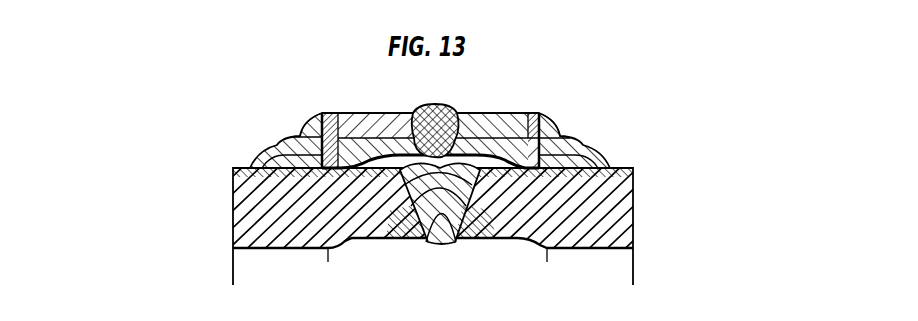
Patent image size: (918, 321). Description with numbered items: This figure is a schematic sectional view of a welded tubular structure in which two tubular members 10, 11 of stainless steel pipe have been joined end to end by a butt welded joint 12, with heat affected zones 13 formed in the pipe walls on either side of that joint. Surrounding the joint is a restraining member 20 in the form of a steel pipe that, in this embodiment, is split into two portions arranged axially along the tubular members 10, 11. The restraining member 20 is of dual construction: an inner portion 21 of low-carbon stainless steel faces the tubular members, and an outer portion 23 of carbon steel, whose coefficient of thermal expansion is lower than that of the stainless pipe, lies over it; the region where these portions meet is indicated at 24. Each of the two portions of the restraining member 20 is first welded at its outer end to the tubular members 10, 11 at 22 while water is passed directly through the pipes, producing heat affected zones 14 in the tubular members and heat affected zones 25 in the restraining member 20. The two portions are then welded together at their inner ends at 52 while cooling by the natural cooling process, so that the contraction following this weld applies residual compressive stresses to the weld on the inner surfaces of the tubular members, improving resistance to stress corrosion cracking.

The tubular member 10 is at (282, 240).
The tubular member 11 is at (585, 240).
The butt welded joint 12 is at (440, 244).
The heat affected zones 13 is at (405, 240).
The heat affected zones 14 is at (250, 168).
The restraining member 20 is at (475, 113).
The inner portion 21 is at (362, 147).
The weld 22 is at (285, 138).
The outer portion 23 is at (390, 128).
The sidewall spacer 24 is at (345, 130).
The heat affected zones 25 is at (328, 110).
The weld 52 is at (428, 112).